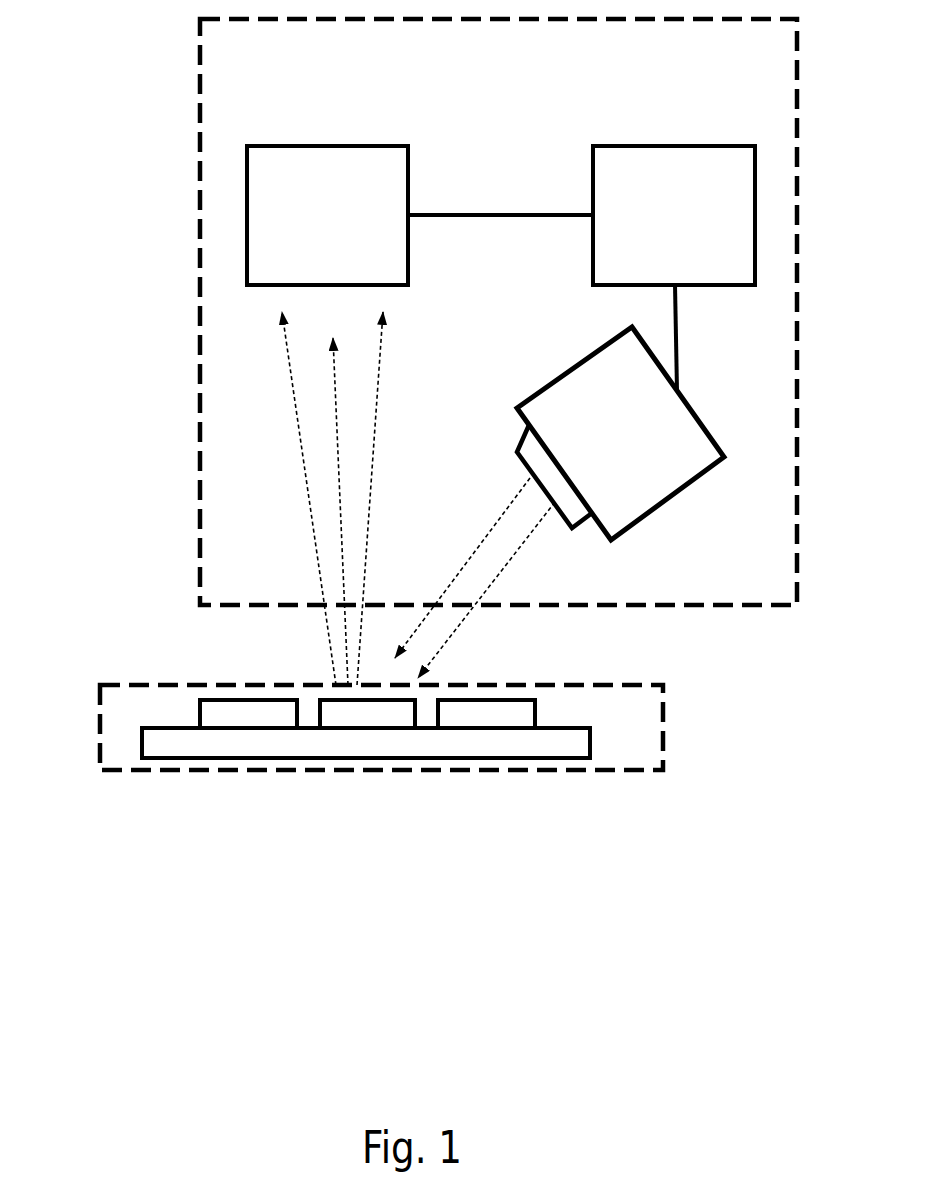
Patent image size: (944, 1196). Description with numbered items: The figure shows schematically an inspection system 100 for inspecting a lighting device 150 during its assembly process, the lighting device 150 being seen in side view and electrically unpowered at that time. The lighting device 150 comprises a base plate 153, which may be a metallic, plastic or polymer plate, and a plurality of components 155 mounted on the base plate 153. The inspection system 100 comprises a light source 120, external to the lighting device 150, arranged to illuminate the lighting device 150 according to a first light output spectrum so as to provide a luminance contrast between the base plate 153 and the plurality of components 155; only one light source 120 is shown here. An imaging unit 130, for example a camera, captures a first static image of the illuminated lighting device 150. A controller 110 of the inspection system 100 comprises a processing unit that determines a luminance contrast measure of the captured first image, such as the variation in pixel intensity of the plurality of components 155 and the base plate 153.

The inspection system 100 is at (190, 357).
The controller 110 is at (697, 145).
The light source 120 is at (653, 510).
The imaging unit 130 is at (366, 145).
The lighting device 150 is at (613, 772).
The base plate 153 is at (452, 755).
The plurality of components 155 is at (245, 698).